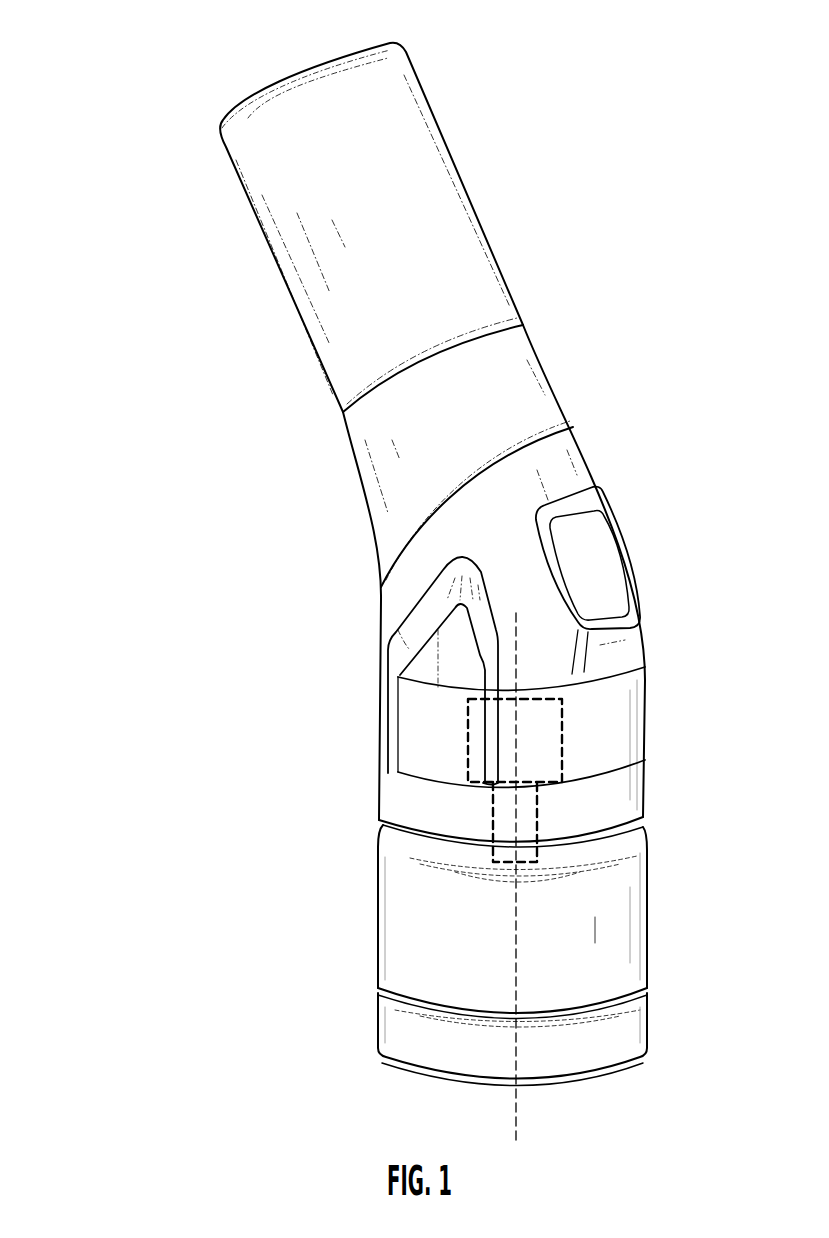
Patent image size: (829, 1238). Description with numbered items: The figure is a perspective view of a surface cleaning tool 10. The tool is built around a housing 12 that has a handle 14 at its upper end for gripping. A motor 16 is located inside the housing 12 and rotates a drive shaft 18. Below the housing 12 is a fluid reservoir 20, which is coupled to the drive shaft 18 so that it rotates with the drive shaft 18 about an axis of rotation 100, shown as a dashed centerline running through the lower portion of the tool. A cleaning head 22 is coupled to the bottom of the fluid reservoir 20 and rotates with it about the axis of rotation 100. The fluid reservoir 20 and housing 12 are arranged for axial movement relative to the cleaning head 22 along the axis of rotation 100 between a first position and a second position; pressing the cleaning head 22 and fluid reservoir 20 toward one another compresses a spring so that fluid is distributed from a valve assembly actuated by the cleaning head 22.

The surface cleaning tool 10 is at (240, 630).
The housing 12 is at (512, 573).
The handle 14 is at (507, 122).
The motor 16 is at (562, 730).
The drive shaft 18 is at (538, 820).
The fluid reservoir 20 is at (578, 937).
The cleaning head 22 is at (567, 1045).
The axis of rotation 100 is at (515, 935).